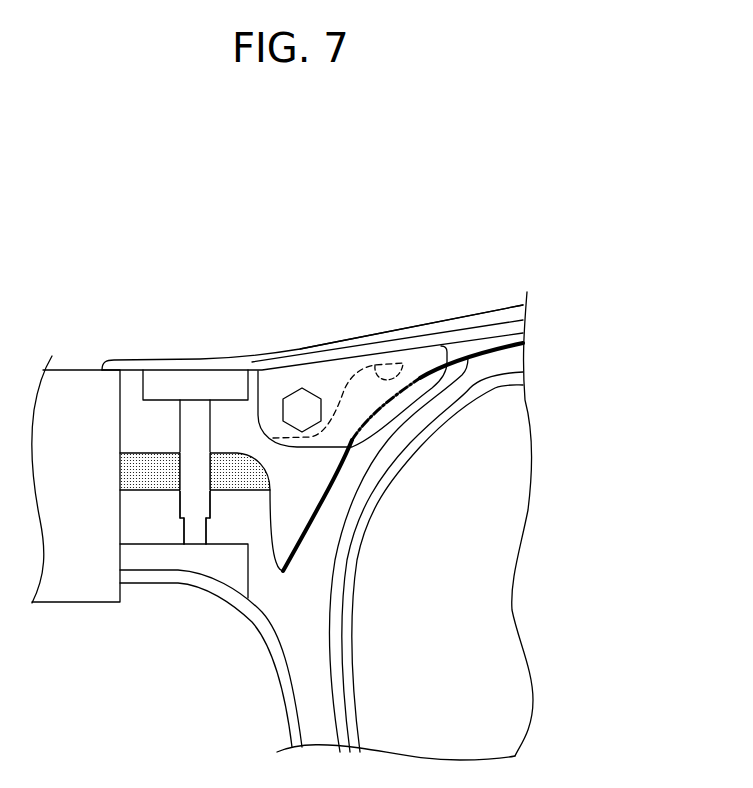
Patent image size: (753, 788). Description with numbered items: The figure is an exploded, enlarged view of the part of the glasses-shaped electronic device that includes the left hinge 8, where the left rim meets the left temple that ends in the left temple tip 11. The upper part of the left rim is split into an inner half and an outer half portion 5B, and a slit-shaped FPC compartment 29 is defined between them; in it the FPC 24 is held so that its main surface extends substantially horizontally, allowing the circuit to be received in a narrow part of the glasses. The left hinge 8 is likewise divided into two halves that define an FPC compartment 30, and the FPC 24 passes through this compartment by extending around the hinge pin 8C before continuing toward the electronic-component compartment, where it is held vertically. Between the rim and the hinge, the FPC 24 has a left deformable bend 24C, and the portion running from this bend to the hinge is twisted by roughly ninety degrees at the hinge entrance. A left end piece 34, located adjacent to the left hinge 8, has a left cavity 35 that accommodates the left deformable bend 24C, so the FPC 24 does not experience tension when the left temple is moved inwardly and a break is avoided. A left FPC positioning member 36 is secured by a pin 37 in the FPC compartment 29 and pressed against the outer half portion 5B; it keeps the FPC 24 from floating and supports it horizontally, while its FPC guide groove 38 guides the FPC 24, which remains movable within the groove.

The outer half portion 5B is at (502, 318).
The left hinge 8 is at (190, 377).
The hinge pin 8C is at (195, 507).
The left temple tip 11 is at (74, 378).
The FPC 24 is at (520, 371).
The left deformable bend 24C is at (300, 557).
The FPC compartment 29 is at (463, 347).
The FPC compartment 30 is at (160, 408).
The left end piece 34 is at (303, 468).
The left cavity 35 is at (296, 508).
The left FPC positioning member 36 is at (348, 370).
The pin 37 is at (302, 390).
The FPC guide groove 38 is at (405, 355).